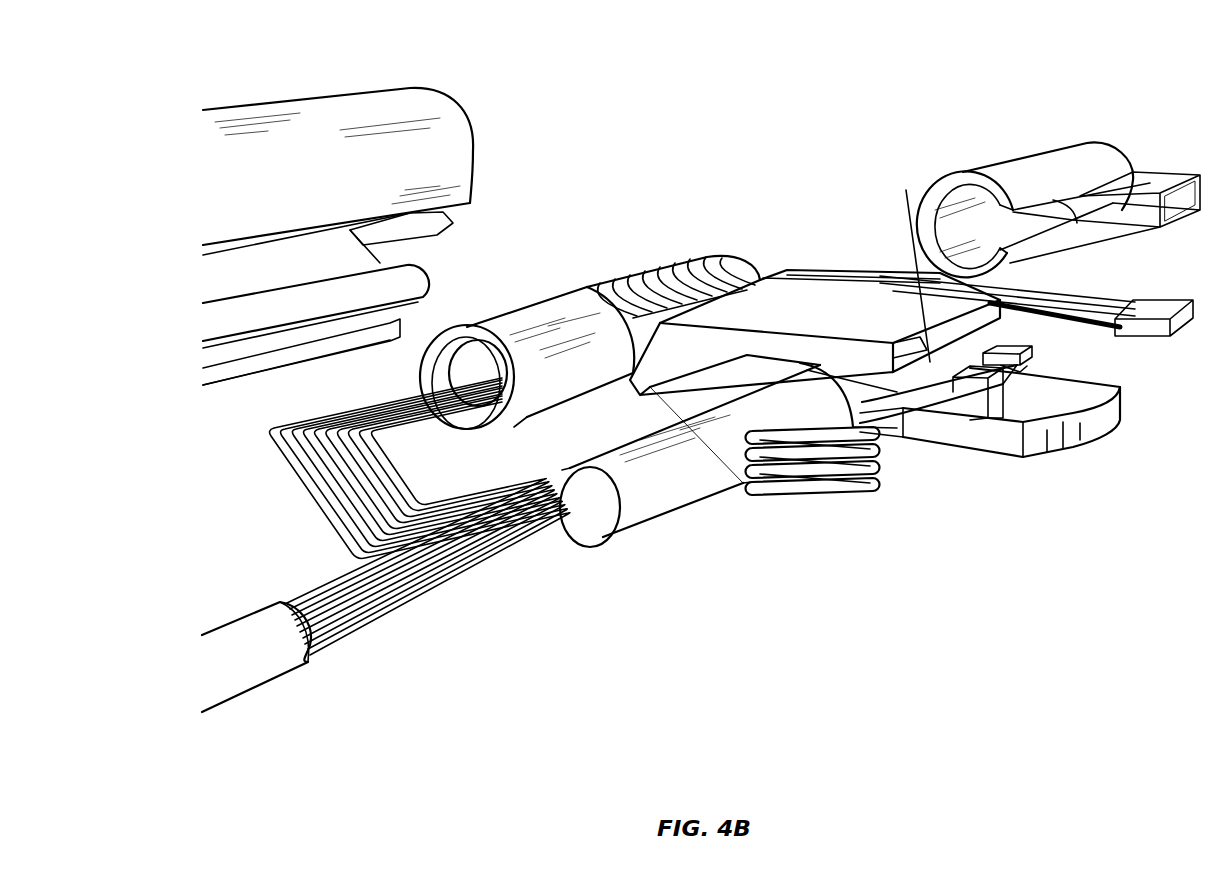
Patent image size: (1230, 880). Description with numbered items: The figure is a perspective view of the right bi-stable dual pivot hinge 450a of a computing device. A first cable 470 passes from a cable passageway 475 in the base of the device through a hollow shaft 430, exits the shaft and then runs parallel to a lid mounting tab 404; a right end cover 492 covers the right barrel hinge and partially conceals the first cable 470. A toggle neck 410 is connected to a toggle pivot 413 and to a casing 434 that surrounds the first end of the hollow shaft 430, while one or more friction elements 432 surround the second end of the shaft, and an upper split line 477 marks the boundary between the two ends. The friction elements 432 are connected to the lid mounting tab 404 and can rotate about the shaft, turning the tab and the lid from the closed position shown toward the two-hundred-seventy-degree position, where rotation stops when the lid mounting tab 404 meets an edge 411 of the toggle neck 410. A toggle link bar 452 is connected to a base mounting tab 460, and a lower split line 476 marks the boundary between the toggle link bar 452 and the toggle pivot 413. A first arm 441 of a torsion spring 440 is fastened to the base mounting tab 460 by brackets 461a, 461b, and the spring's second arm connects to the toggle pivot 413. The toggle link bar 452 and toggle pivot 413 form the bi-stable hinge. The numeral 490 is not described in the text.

The housing shell 490 is at (423, 102).
The right end cover 492 is at (1093, 152).
The right bi-stable dual pivot hinge 450a is at (742, 198).
The toggle link bar 452 is at (908, 192).
The lid mounting tab 404 is at (823, 297).
The friction elements 432 is at (718, 264).
The upper split line 477 is at (587, 292).
The casing 434 is at (453, 337).
The hollow shaft 430 is at (457, 355).
The first cable 470 is at (423, 587).
The cable passageway 475 is at (253, 675).
The toggle pivot 413 is at (643, 517).
The toggle neck 410 is at (647, 385).
The edge 411 is at (653, 410).
The lower split line 476 is at (862, 408).
The torsion spring 440 is at (856, 508).
The first arm 441 is at (938, 403).
The base mounting tab 460 is at (1107, 418).
The bracket 461a is at (993, 400).
The bracket 461b is at (1030, 356).